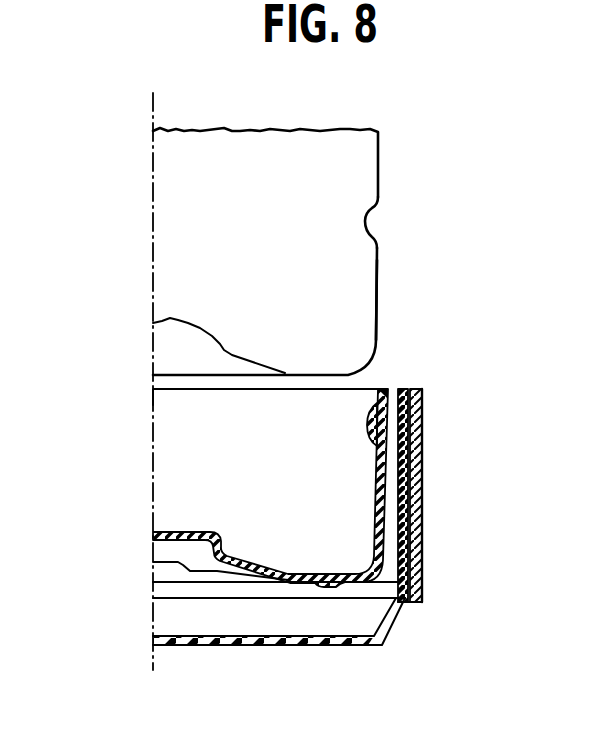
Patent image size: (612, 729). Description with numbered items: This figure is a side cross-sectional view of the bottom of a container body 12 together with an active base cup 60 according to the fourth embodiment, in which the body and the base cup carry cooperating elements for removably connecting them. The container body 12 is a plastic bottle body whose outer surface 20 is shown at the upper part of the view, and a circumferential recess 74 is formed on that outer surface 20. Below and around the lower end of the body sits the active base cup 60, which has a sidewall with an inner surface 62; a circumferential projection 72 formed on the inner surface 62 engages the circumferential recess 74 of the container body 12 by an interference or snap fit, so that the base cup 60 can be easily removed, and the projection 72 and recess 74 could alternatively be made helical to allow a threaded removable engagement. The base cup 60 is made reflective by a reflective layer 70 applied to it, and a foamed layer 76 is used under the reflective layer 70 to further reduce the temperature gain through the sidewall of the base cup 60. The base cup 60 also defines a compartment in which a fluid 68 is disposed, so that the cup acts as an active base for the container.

The container body 12 is at (363, 160).
The circumferential recess 74 is at (367, 218).
The outer surface 20 is at (377, 284).
The circumferential projection 72 is at (367, 425).
The inner surface 62 is at (375, 460).
The active base cup 60 is at (404, 472).
The reflective layer 70 is at (421, 490).
The foamed layer 76 is at (411, 558).
The fluid 68 is at (165, 572).